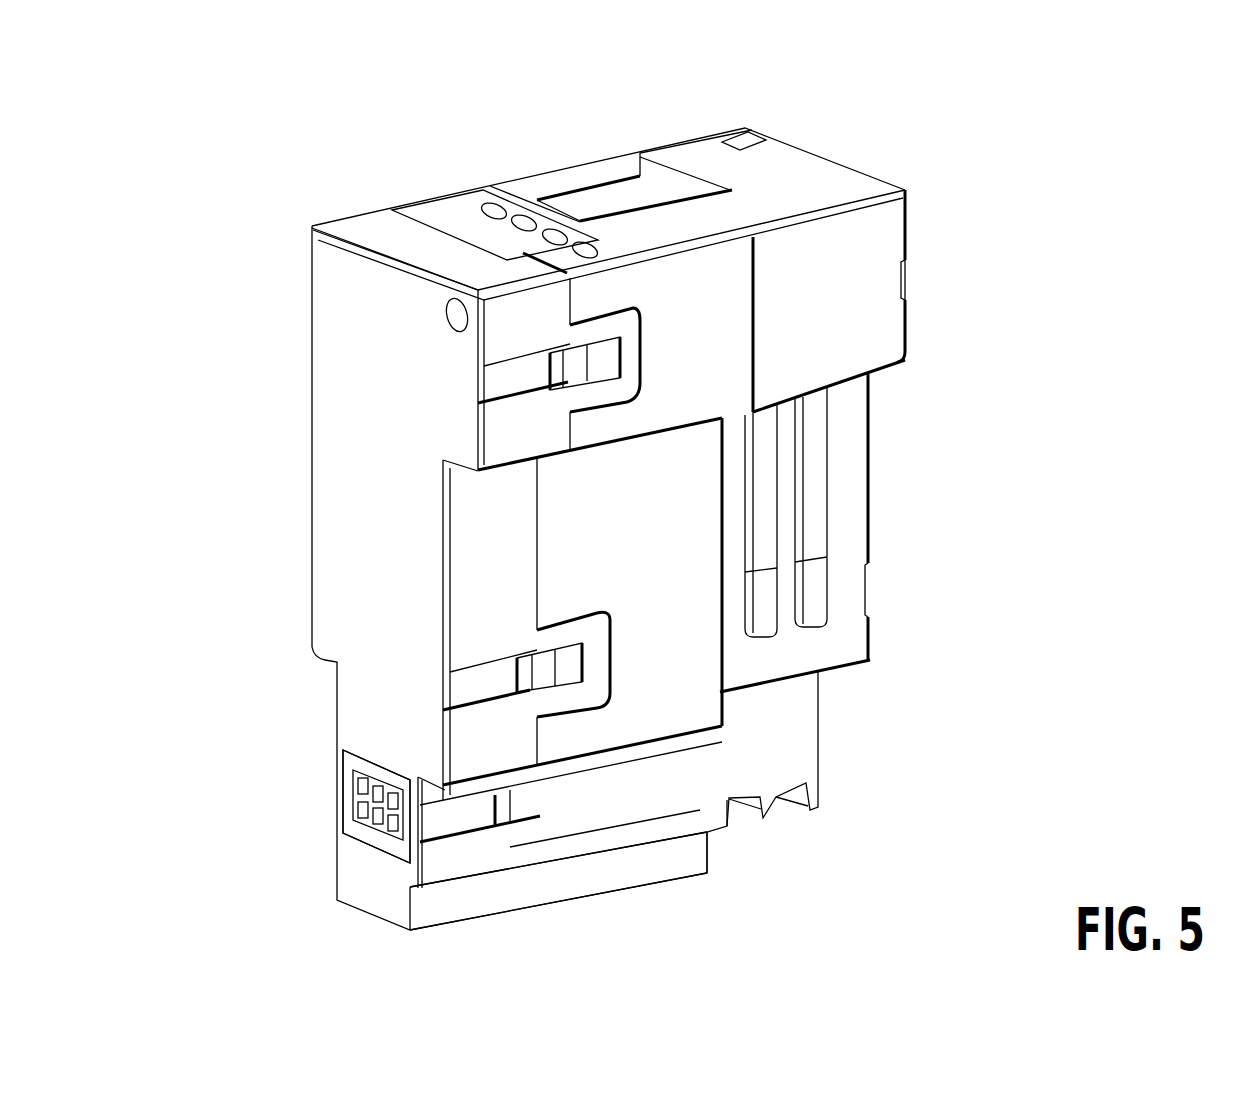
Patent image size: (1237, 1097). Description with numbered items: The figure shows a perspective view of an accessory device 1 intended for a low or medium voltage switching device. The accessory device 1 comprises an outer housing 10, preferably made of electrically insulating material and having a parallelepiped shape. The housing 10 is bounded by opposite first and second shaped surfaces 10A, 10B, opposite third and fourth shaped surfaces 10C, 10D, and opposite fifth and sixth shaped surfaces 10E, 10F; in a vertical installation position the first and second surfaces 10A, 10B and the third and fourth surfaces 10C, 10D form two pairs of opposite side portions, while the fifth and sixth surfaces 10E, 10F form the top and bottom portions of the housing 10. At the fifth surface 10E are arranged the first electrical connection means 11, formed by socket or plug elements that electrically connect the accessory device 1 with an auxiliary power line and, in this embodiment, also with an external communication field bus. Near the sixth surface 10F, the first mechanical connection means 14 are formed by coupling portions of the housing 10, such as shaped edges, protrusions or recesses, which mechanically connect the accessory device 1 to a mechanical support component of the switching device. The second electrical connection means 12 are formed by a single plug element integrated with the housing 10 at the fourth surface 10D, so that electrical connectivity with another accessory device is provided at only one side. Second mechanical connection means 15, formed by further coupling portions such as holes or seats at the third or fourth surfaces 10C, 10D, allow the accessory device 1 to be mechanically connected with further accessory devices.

The accessory device 1 is at (967, 177).
The outer housing 10 is at (420, 130).
The first shaped surface 10A is at (297, 228).
The second shaped surface 10B is at (856, 481).
The third shaped surface 10C is at (918, 382).
The fourth shaped surface 10D is at (343, 552).
The fifth shaped surface 10E is at (853, 172).
The sixth shaped surface 10F is at (623, 900).
The first electrical connection means 11 is at (585, 188).
The second electrical connection means 12 is at (350, 806).
The first mechanical connection means 14 is at (800, 720).
The second mechanical connection means 15 is at (435, 318).